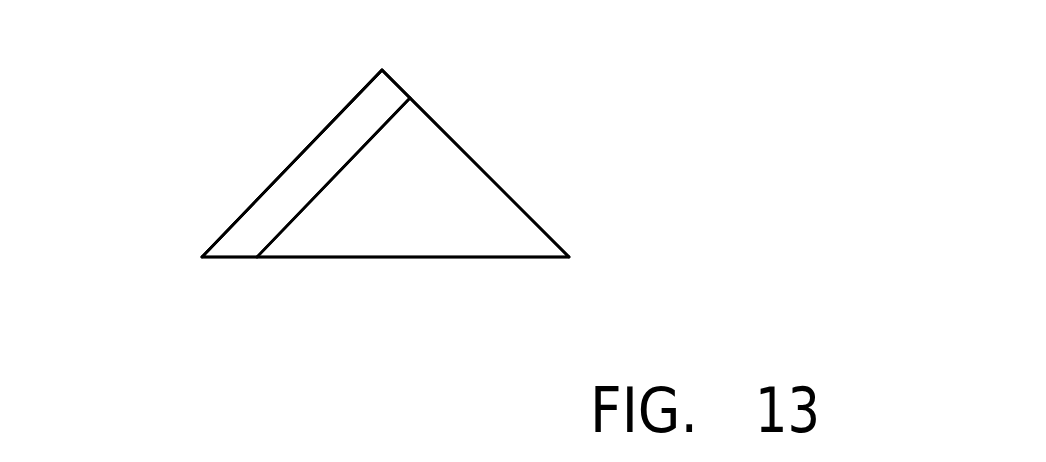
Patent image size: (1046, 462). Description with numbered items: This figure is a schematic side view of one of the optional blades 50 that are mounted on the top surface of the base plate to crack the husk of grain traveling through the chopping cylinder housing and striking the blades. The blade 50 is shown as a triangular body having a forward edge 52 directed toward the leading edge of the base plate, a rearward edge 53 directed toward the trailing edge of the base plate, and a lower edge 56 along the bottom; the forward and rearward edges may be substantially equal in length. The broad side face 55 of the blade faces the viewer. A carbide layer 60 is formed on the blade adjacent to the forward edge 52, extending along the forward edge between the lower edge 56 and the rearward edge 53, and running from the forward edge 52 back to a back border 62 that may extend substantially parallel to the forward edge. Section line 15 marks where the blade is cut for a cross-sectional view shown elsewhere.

The section line 15 is at (359, 31).
The blade 50 is at (483, 110).
The forward edge 52 is at (260, 193).
The rearward edge 53 is at (527, 212).
The side face 55 is at (461, 192).
The lower edge 56 is at (378, 257).
The carbide layer 60 is at (252, 243).
The back border 62 is at (308, 205).